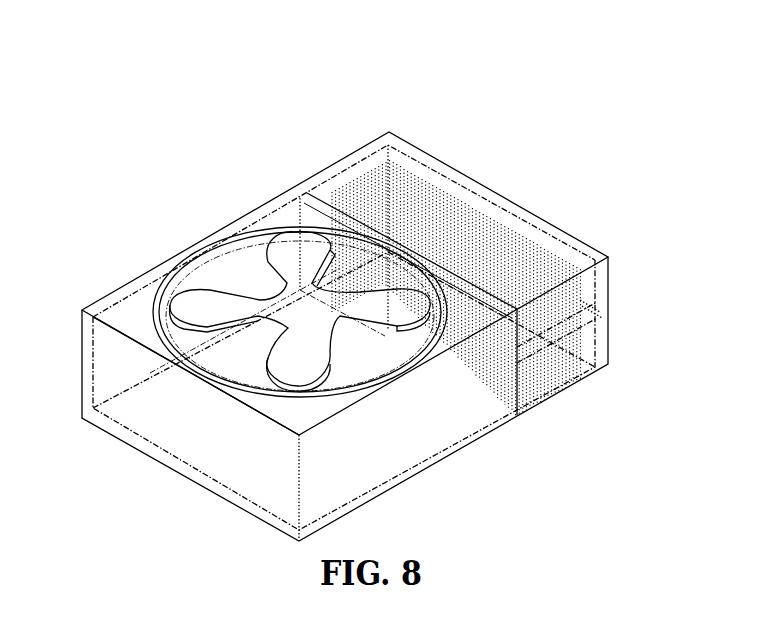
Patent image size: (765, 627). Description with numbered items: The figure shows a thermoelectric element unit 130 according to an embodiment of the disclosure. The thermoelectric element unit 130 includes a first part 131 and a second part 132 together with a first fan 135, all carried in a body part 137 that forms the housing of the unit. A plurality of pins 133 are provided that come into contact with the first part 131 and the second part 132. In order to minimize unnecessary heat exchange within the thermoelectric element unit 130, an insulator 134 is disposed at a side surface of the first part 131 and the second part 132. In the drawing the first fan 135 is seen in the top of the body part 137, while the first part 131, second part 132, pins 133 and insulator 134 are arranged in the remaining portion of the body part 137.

The thermoelectric element unit 130 is at (363, 53).
The first part 131 is at (597, 326).
The second part 132 is at (577, 345).
The pins 133 is at (557, 372).
The insulator 134 is at (592, 308).
The first fan 135 is at (277, 252).
The body part 137 is at (408, 480).